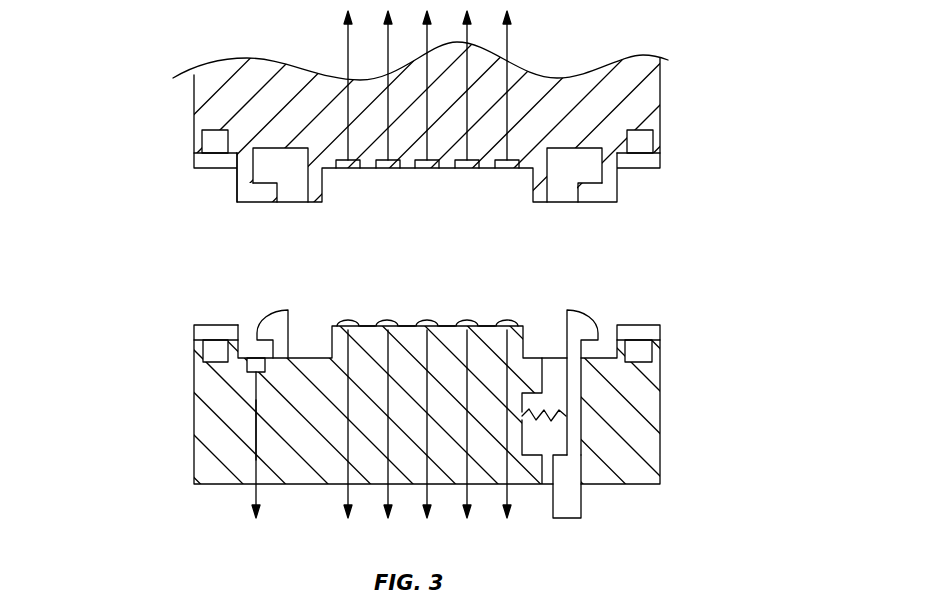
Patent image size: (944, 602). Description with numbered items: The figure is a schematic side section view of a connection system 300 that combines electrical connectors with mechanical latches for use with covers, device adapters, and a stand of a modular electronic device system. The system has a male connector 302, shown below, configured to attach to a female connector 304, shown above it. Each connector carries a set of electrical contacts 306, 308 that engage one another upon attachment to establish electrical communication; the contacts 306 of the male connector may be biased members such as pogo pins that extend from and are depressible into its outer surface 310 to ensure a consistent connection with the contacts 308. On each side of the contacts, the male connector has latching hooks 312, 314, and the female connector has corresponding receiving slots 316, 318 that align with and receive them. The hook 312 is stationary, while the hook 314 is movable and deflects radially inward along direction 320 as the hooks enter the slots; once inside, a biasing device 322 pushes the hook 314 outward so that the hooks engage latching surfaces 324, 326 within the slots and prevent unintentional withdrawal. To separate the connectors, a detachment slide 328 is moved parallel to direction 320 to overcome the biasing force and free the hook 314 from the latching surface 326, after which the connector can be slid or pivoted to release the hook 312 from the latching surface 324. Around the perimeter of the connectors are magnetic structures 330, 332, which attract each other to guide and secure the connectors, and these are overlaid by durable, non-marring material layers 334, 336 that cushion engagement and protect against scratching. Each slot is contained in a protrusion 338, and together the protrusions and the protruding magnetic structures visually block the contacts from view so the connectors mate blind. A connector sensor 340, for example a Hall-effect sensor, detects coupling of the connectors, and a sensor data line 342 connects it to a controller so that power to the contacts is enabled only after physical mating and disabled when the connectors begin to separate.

The connection system 300 is at (82, 86).
The male connector 302 is at (182, 440).
The female connector 304 is at (186, 88).
The electrical contacts 306 is at (510, 320).
The electrical contacts 308 is at (495, 200).
The outer surface 310 is at (403, 324).
The latching hook 312 is at (290, 332).
The latching hook 314 is at (588, 330).
The receiving slot 316 is at (278, 157).
The receiving slot 318 is at (563, 158).
The direction 320 is at (535, 332).
The biasing device 322 is at (547, 412).
The latching surface 324 is at (257, 168).
The latching surface 326 is at (642, 140).
The detachment slide 328 is at (572, 503).
The magnetic structures 330 is at (212, 143).
The magnetic structures 332 is at (200, 352).
The material layer 334 is at (208, 158).
The material layer 336 is at (195, 325).
The protrusion 338 is at (253, 200).
The connector sensor 340 is at (232, 366).
The sensor data line 342 is at (253, 443).